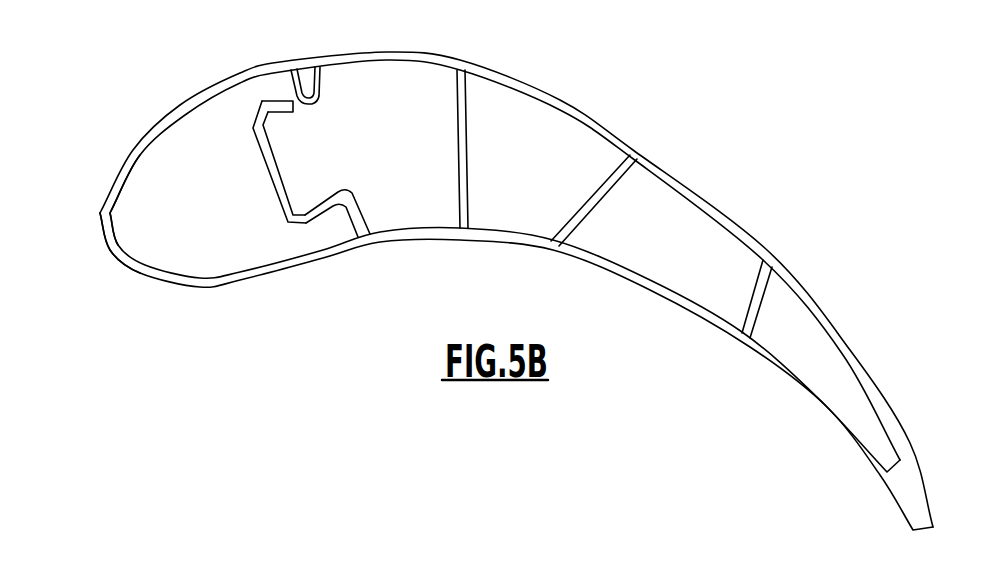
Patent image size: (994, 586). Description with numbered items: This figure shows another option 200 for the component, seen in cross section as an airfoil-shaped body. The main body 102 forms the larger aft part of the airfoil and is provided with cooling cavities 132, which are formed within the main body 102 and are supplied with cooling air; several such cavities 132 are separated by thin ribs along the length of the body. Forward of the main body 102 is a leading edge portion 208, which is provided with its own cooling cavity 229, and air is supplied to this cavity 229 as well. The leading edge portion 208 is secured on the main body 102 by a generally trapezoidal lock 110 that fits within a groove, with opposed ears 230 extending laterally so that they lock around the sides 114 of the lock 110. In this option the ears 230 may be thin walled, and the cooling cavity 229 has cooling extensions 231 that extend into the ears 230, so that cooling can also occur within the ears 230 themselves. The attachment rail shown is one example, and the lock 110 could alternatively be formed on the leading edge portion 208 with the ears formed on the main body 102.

The main body portion 102 is at (570, 100).
The trapezoidal lock 110 is at (295, 163).
The sides of the lock 114 is at (313, 197).
The cooling cavities 132 is at (423, 92).
The option 200 is at (343, 337).
The leading edge portion 208 is at (128, 268).
The cooling cavity 229 is at (118, 210).
The ears 230 is at (277, 100).
The cooling extensions 231 is at (318, 233).